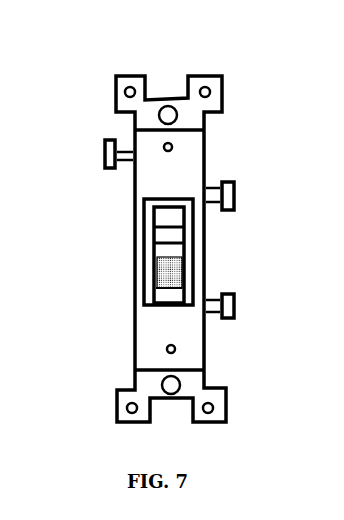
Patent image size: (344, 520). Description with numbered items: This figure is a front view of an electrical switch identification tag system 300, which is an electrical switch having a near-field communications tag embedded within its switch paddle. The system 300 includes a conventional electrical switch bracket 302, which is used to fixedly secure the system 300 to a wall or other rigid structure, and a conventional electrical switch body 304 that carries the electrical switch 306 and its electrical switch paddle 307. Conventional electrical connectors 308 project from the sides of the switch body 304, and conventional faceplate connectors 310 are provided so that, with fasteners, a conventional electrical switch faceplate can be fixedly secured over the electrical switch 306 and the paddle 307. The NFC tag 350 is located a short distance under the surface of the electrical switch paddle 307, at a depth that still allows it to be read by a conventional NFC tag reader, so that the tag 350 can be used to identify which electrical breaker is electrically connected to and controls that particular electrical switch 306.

The electrical switch identification tag system 300 is at (178, 224).
The electrical switch bracket 302 is at (115, 90).
The electrical switch body 304 is at (205, 146).
The electrical switch 306 is at (183, 252).
The electrical switch paddle 307 is at (158, 290).
The electrical connectors 308 is at (102, 152).
The faceplate connectors 310 is at (176, 349).
The NFC tag 350 is at (176, 269).